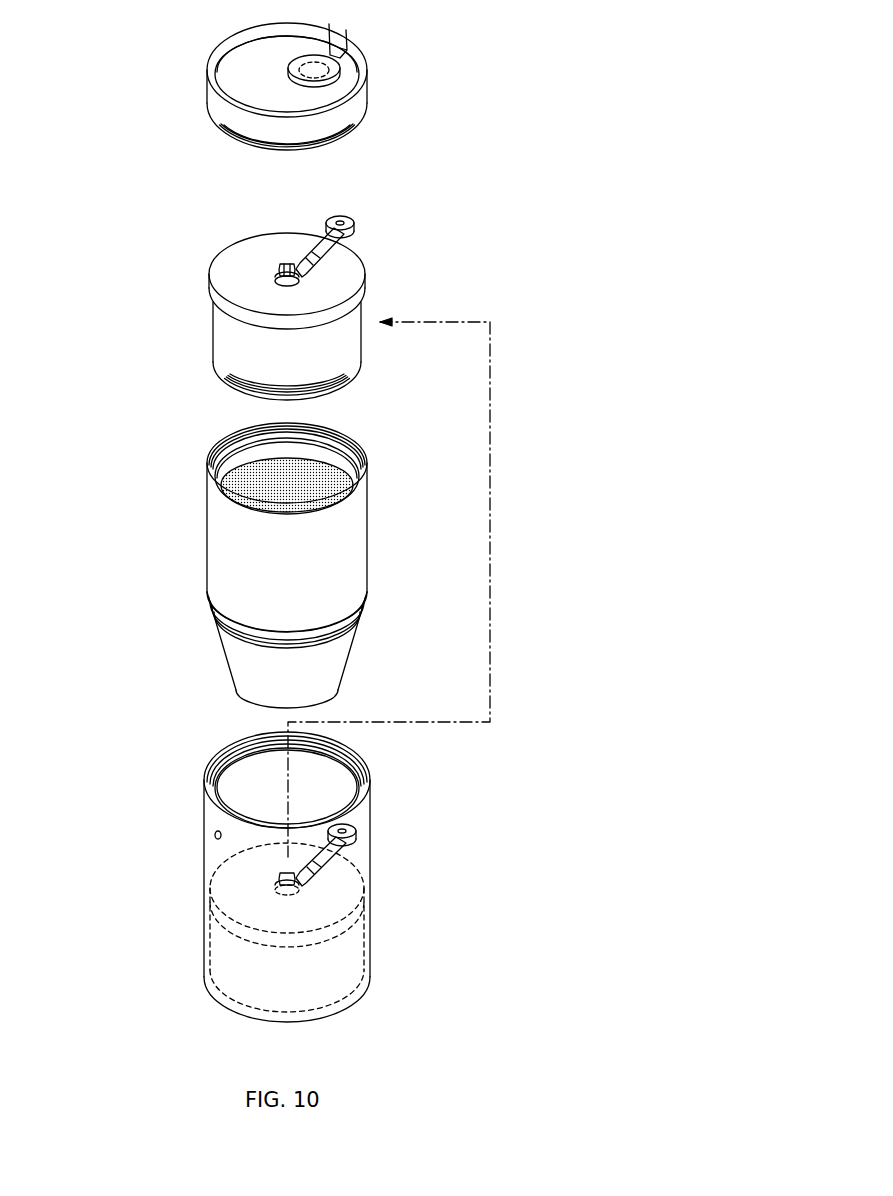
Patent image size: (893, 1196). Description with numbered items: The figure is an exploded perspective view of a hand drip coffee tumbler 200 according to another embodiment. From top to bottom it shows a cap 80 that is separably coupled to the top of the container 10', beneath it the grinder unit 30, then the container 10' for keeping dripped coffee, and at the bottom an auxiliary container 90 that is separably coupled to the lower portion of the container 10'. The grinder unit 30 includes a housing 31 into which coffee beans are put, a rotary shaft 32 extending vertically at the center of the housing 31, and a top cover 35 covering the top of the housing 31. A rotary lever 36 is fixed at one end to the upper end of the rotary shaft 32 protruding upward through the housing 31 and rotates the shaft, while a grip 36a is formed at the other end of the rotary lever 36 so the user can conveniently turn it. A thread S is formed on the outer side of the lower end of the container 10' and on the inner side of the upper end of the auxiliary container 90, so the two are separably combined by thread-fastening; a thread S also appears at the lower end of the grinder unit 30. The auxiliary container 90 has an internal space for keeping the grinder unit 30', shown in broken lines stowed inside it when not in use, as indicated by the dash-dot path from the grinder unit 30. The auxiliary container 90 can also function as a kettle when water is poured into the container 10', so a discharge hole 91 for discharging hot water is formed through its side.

The hand drip coffee tumbler 200 is at (438, 45).
The cap 80 is at (213, 92).
The grinder unit 30 is at (274, 288).
The top cover 35 is at (227, 256).
The rotary shaft 32 is at (283, 262).
The rotary lever 36 is at (313, 240).
The grip 36a is at (358, 224).
The housing 31 is at (218, 328).
The thread S is at (358, 370).
The container 10' is at (330, 565).
The auxiliary container 90 is at (371, 835).
The discharge hole 91 is at (215, 838).
The grinder unit 30' is at (323, 918).